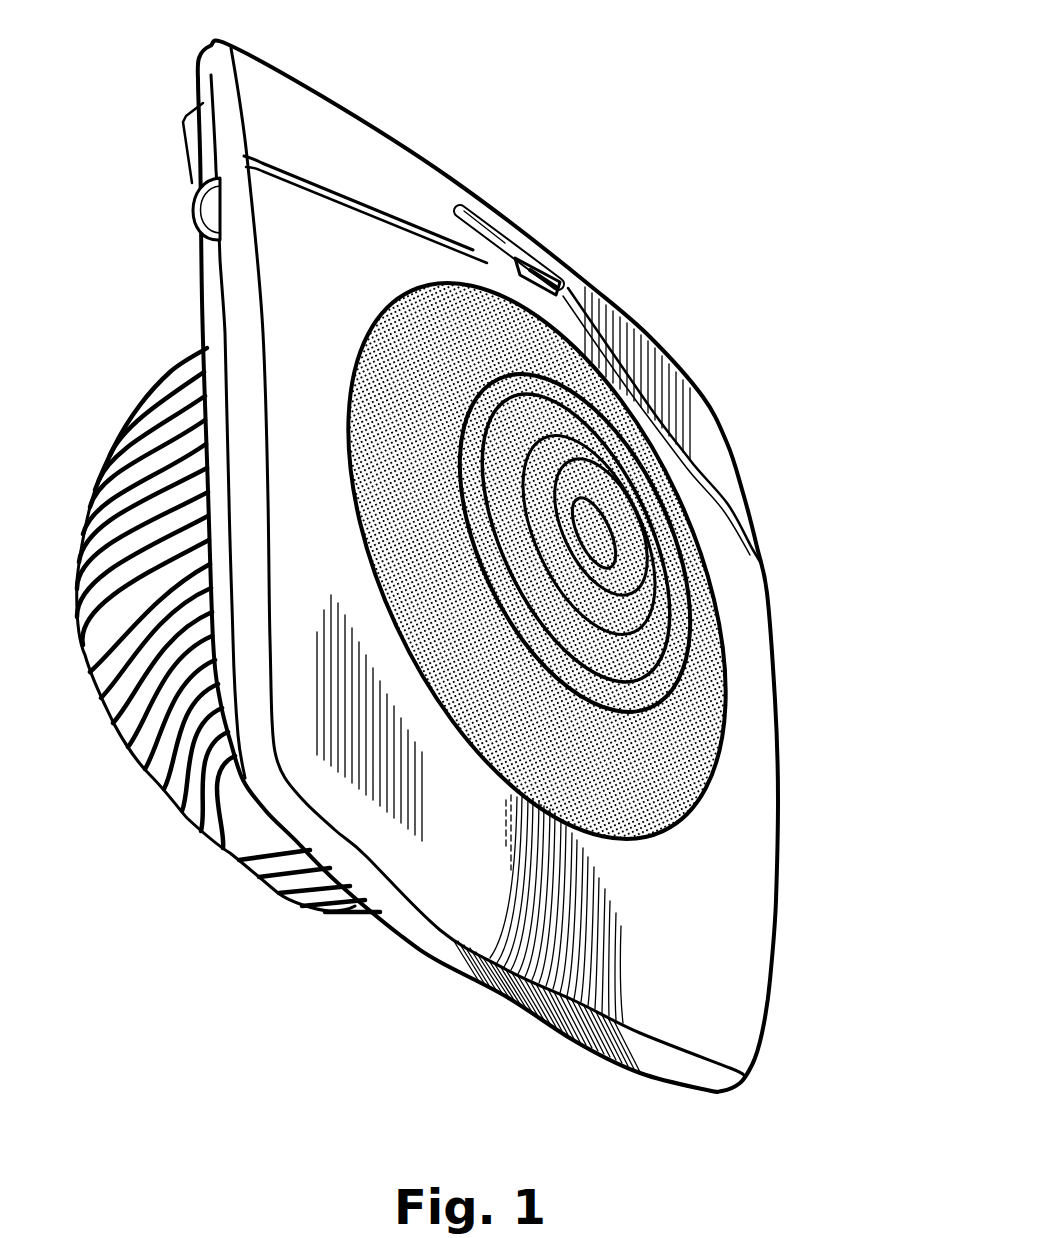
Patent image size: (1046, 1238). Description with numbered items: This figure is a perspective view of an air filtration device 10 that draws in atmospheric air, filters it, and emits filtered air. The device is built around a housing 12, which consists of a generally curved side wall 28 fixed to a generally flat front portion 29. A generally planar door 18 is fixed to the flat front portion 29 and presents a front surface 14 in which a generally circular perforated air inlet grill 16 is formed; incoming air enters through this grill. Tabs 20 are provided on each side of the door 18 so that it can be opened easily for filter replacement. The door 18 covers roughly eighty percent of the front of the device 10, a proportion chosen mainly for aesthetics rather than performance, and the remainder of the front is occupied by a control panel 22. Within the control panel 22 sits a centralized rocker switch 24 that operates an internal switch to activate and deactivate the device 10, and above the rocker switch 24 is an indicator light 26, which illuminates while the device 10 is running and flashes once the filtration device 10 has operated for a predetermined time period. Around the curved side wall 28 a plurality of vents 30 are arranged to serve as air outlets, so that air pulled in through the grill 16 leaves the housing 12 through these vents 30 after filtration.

The air filtration device 10 is at (553, 133).
The housing 12 is at (355, 952).
The front surface 14 is at (786, 716).
The perforated air inlet grill 16 is at (693, 603).
The door 18 is at (735, 944).
The tabs 20 is at (212, 207).
The control panel 22 is at (668, 390).
The rocker switch 24 is at (553, 263).
The indicator light 26 is at (499, 222).
The curved side wall 28 is at (132, 421).
The flat front portion 29 is at (211, 280).
The vents 30 is at (185, 812).